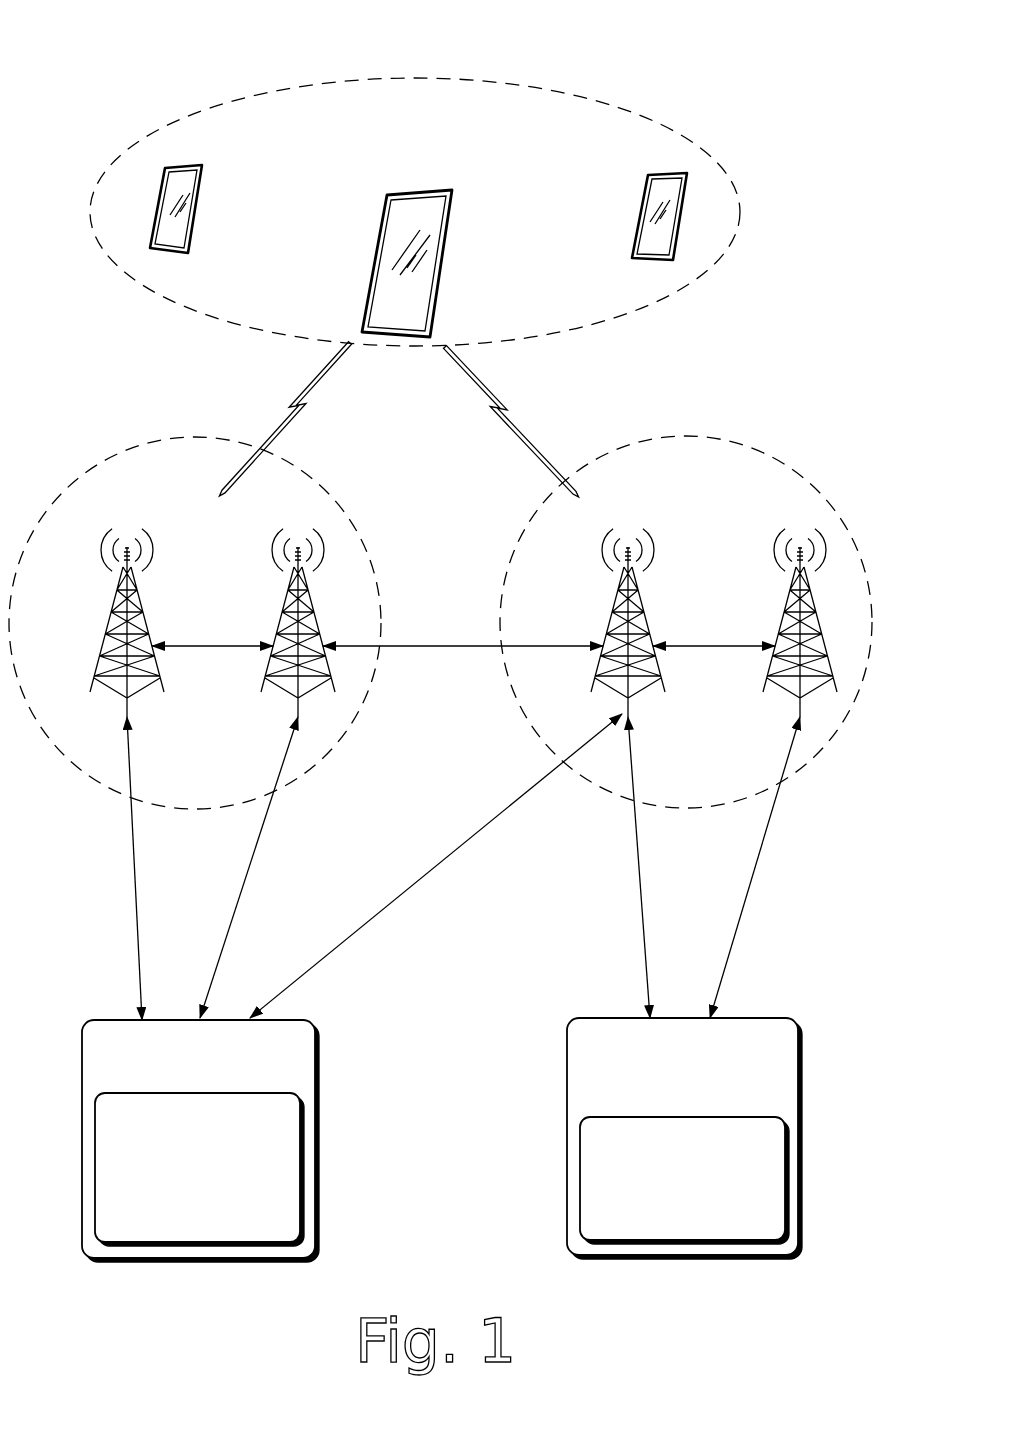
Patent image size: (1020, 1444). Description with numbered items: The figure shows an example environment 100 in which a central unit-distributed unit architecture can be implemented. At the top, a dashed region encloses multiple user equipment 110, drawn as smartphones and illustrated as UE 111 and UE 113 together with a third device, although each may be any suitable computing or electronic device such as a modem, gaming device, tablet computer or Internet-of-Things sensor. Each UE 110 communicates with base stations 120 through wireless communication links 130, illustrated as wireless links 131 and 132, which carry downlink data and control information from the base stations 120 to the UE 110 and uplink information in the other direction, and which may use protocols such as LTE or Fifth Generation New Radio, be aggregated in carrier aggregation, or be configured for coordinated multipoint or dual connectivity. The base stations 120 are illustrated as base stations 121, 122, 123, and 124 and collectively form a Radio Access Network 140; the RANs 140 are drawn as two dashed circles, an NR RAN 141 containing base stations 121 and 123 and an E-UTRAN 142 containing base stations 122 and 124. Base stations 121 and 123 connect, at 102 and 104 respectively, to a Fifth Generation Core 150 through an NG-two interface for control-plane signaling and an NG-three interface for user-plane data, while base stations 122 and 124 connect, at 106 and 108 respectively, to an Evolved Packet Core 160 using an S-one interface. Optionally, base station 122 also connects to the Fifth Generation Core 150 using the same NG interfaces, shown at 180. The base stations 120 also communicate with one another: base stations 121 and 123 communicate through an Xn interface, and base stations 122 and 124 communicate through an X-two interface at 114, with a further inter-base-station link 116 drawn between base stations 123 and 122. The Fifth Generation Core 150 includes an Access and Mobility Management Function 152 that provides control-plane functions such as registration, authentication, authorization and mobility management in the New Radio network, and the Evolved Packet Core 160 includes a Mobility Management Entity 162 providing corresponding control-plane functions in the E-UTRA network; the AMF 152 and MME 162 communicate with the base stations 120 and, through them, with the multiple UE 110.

The environment 100 is at (130, 42).
The user equipment 110 is at (665, 123).
The UE 111 is at (458, 186).
The UE 113 is at (645, 177).
The base stations 120 is at (183, 516).
The base station 121 is at (108, 604).
The base station 122 is at (610, 604).
The base station 123 is at (280, 604).
The base station 124 is at (783, 604).
The wireless communication links 130 is at (520, 377).
The wireless link 131 is at (266, 416).
The wireless link 132 is at (534, 418).
The Radio Access Network 140 is at (433, 456).
The NR RAN 141 is at (340, 498).
The E-UTRAN 142 is at (538, 498).
The X2 interface connection 114 is at (752, 652).
The inter-base-station link 116 is at (470, 652).
The NG2/NG3 connection 102 is at (140, 858).
The NG2/NG3 connection 104 is at (256, 856).
The S1 interface connection 106 is at (634, 858).
The S1 interface connection 108 is at (752, 858).
The NG2/NG3 connection 180 is at (420, 890).
The Fifth Generation Core 150 is at (200, 1141).
The Access and Mobility Management Function 152 is at (199, 1169).
The Evolved Packet Core 160 is at (684, 1138).
The Mobility Management Entity 162 is at (684, 1180).